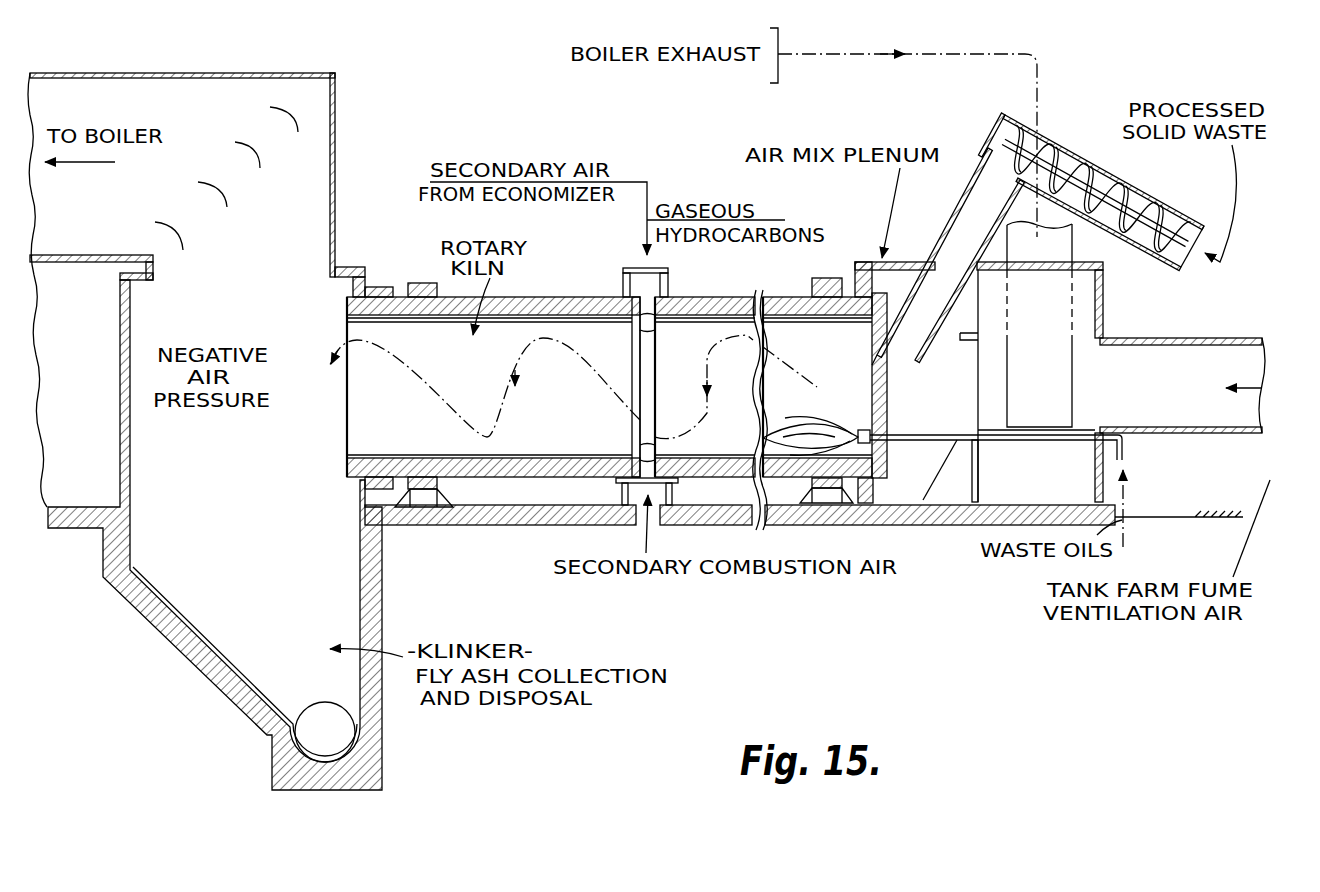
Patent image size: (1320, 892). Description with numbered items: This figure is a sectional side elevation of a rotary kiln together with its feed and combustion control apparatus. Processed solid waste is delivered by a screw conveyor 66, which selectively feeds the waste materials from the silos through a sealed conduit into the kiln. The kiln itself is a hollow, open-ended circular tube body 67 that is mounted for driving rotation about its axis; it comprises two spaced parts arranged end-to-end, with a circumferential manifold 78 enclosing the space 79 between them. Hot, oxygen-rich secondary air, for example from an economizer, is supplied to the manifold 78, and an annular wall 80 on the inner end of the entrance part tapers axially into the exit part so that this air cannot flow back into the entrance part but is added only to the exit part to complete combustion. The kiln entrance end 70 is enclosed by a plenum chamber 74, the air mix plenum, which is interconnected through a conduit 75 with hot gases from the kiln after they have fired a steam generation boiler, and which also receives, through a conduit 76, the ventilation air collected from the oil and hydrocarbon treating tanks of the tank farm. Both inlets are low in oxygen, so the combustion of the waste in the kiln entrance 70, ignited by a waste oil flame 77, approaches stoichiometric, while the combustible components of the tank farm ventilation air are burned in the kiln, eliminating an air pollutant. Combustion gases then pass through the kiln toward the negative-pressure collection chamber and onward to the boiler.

The screw conveyor 66 is at (1122, 197).
The kiln tube body 67 is at (502, 480).
The kiln entrance end 70 is at (883, 325).
The plenum chamber 74 is at (1103, 307).
The conduit 75 is at (1062, 250).
The conduit 76 is at (1200, 433).
The waste oil flame 77 is at (777, 428).
The circumferential manifold 78 is at (670, 276).
The space 79 is at (648, 300).
The annular wall 80 is at (655, 318).